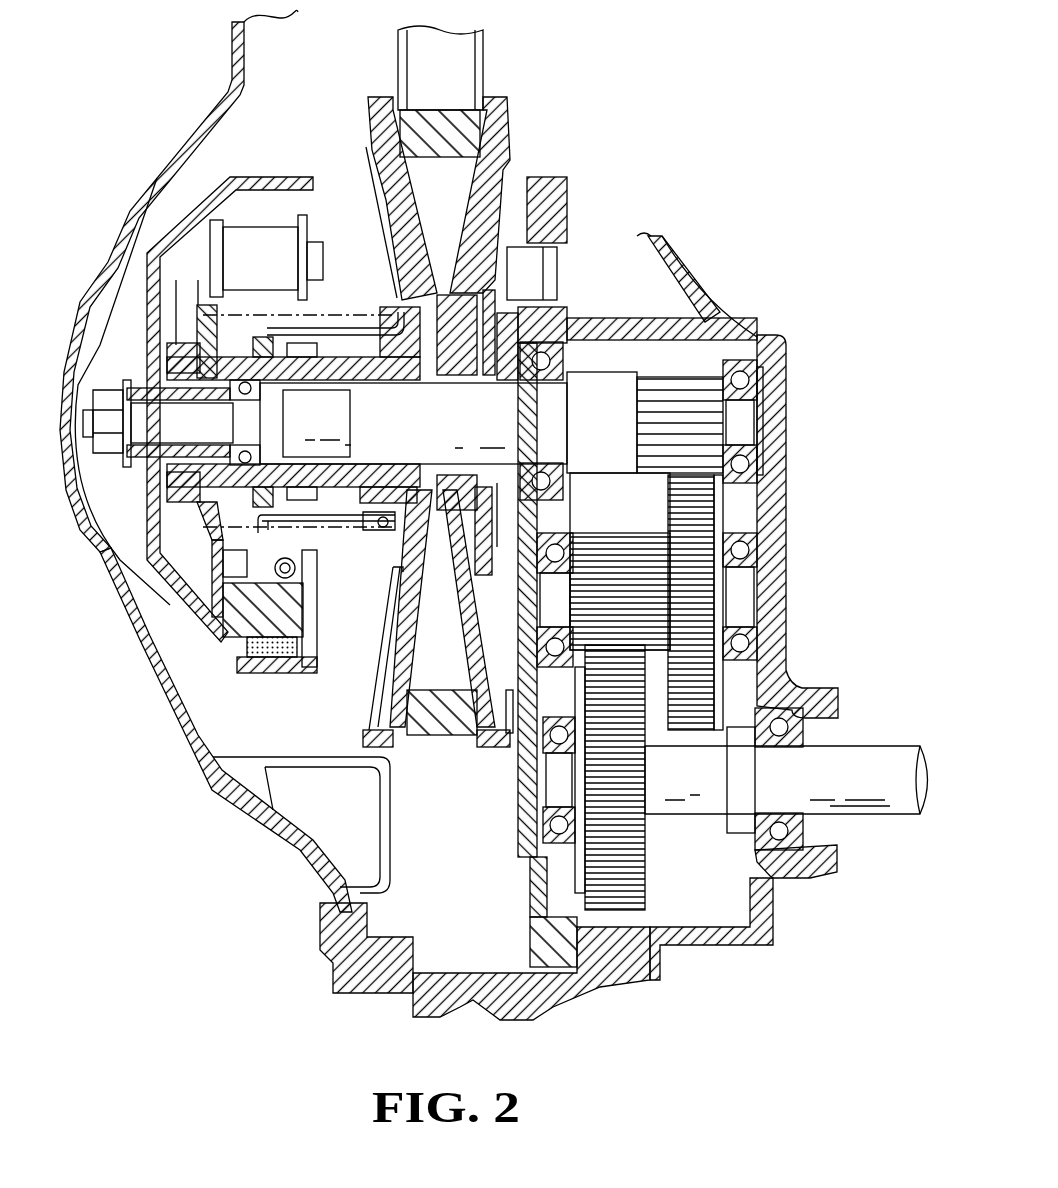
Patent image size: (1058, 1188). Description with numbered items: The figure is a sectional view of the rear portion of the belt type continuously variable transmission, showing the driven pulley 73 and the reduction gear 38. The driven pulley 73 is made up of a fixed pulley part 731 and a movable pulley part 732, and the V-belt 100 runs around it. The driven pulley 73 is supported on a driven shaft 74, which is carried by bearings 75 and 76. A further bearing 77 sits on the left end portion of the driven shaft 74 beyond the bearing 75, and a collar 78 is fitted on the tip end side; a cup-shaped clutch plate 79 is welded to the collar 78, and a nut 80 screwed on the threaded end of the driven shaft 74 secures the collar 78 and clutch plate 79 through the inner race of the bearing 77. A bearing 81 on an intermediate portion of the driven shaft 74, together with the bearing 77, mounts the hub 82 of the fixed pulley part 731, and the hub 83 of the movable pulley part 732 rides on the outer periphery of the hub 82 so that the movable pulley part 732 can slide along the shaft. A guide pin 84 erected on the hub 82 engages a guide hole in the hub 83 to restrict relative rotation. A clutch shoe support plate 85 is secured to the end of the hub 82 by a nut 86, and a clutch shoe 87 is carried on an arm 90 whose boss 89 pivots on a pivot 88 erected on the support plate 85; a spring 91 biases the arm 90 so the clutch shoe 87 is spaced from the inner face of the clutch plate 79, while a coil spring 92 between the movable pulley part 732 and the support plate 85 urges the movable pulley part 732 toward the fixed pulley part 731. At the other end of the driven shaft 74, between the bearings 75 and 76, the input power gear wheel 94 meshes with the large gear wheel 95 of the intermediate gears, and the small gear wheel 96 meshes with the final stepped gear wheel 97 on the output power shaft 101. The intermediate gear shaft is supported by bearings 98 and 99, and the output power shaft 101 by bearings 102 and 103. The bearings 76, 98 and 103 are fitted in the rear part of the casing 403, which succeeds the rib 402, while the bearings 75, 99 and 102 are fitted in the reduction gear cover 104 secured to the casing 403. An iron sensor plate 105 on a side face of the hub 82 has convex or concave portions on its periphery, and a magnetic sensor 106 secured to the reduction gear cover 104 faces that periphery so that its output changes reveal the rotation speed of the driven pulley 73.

The reduction gear 38 is at (718, 900).
The driven pulley 73 is at (467, 757).
The driven shaft 74 is at (500, 434).
The bearing 75 is at (560, 350).
The bearing 76 is at (772, 340).
The bearing 77 is at (204, 358).
The collar 78 is at (125, 386).
The clutch plate 79 is at (197, 213).
The nut 80 is at (133, 468).
The bearing 81 is at (489, 578).
The hub of the fixed pulley part 82 is at (378, 505).
The hub of the movable pulley part 83 is at (333, 545).
The guide pin 84 is at (320, 316).
The clutch shoe support plate 85 is at (187, 600).
The nut 86 is at (175, 575).
The clutch shoe 87 is at (277, 672).
The pivot 88 is at (320, 257).
The boss 89 is at (257, 235).
The arm 90 is at (237, 610).
The spring 91 is at (297, 578).
The coil spring 92 is at (267, 302).
The input power gear wheel 94 is at (687, 382).
The large gear wheel 95 is at (722, 522).
The small gear wheel 96 is at (616, 534).
The final stepped gear wheel 97 is at (623, 870).
The bearing 98 is at (728, 638).
The bearing 99 is at (523, 660).
The V-belt 100 is at (453, 57).
The output power shaft 101 is at (860, 762).
The bearing 102 is at (548, 832).
The bearing 103 is at (800, 832).
The reduction gear cover 104 is at (540, 937).
The sensor plate 105 is at (512, 215).
The magnetic sensor 106 is at (524, 278).
The rib 402 is at (214, 786).
The casing 403 is at (770, 433).
The fixed pulley part 731 is at (503, 124).
The movable pulley part 732 is at (368, 137).